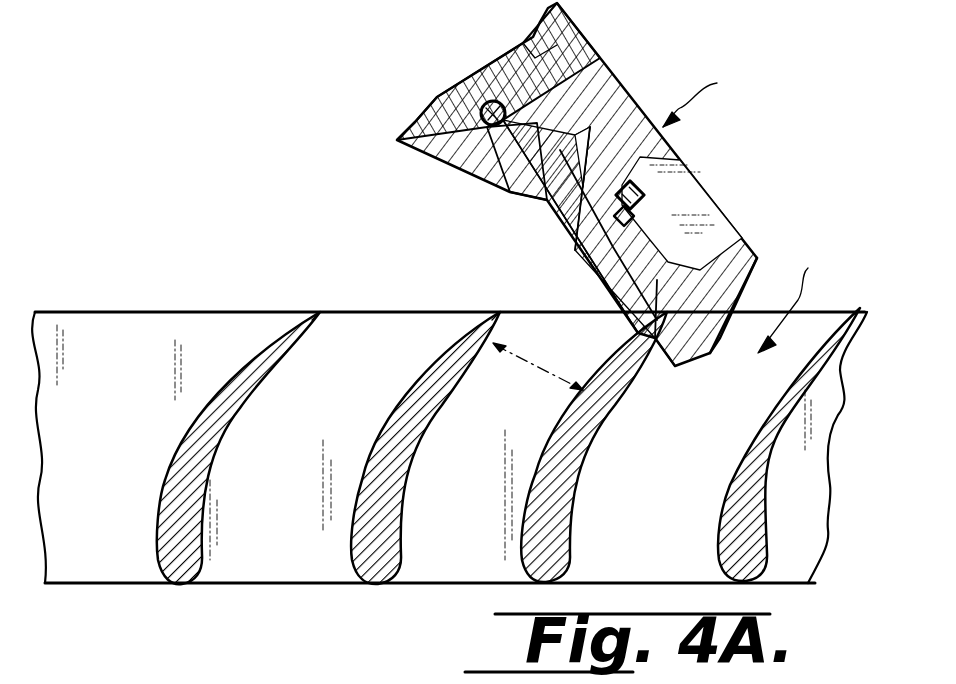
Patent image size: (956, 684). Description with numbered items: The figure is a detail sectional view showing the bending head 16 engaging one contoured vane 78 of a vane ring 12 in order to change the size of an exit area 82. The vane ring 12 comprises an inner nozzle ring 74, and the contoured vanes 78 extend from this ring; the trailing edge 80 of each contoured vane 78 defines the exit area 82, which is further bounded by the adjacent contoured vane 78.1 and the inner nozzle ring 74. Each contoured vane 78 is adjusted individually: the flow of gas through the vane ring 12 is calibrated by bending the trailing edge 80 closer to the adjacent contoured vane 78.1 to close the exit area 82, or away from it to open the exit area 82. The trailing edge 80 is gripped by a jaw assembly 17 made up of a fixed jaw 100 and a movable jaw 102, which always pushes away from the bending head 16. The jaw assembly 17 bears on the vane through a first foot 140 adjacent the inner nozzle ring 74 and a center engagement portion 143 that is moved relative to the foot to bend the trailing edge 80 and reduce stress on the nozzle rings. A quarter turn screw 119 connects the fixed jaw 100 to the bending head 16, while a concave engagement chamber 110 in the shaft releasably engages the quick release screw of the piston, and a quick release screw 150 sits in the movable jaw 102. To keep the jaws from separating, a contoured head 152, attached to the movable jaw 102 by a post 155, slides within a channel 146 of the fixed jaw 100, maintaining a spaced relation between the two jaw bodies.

The vane ring 12 is at (187, 310).
The bending head 16 is at (433, 152).
The jaw assembly 17 is at (706, 100).
The inner nozzle ring 74 is at (112, 432).
The contoured vane 78 is at (383, 423).
The adjacent contoured vane 78.1 is at (730, 463).
The trailing edge 80 is at (497, 313).
The exit area 82 is at (510, 350).
The fixed jaw 100 is at (573, 214).
The movable jaw 102 is at (580, 240).
The concave engagement chamber 110 is at (470, 140).
The quarter turn screw 119 is at (582, 35).
The first foot 140 is at (678, 367).
The center engagement portion 143 is at (705, 345).
The channel 146 is at (673, 203).
The quick release screw 150 is at (487, 130).
The contoured head 152 is at (627, 190).
The post 155 is at (622, 215).